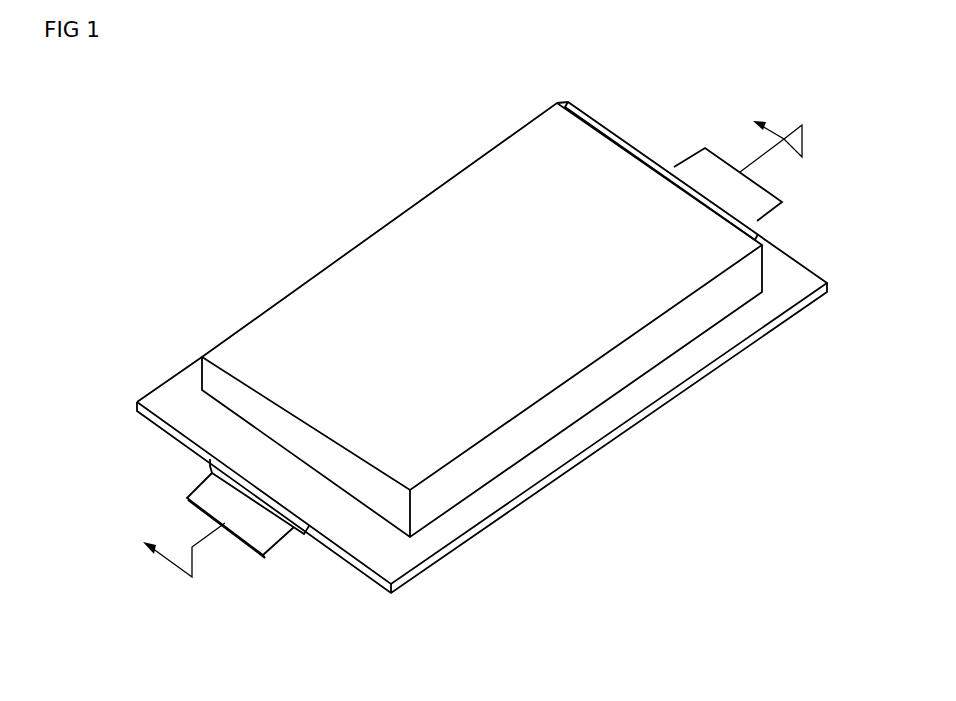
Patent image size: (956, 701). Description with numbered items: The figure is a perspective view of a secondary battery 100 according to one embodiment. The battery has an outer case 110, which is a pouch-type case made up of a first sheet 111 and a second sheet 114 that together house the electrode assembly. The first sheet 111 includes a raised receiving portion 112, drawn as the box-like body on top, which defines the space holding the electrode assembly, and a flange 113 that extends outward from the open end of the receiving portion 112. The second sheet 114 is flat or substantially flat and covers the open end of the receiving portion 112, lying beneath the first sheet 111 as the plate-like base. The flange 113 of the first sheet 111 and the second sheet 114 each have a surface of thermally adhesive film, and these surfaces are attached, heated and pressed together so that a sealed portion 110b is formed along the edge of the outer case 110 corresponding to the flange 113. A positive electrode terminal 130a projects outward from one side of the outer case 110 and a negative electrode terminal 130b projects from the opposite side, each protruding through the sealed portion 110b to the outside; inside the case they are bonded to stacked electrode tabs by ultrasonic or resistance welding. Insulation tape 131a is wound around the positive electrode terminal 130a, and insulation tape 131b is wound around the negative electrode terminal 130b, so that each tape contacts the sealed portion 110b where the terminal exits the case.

The secondary battery 100 is at (200, 198).
The outer case 110 is at (134, 416).
The sealed portion 110b is at (357, 541).
The first sheet 111 is at (200, 356).
The receiving portion 112 is at (370, 243).
The flange 113 is at (163, 388).
The second sheet 114 is at (387, 593).
The positive electrode terminal 130a is at (223, 500).
The negative electrode terminal 130b is at (708, 147).
The insulation tape 131a is at (283, 516).
The insulation tape 131b is at (663, 160).